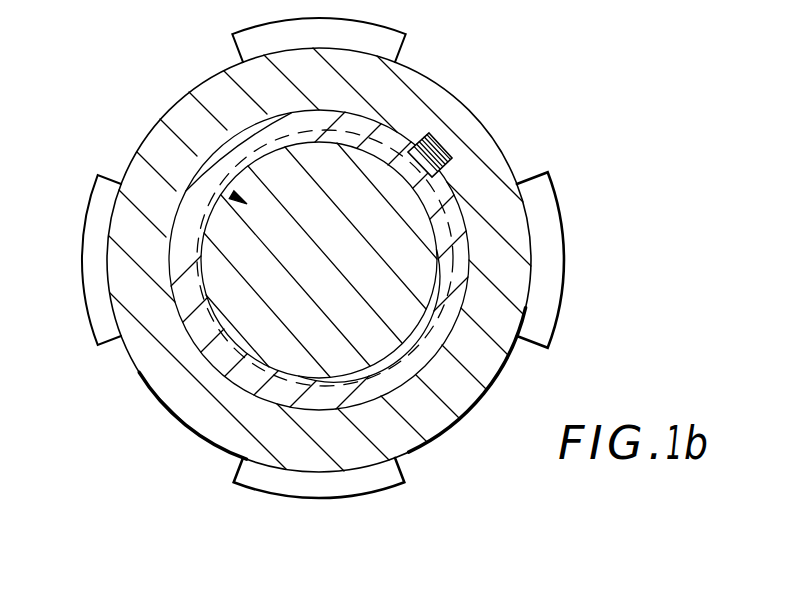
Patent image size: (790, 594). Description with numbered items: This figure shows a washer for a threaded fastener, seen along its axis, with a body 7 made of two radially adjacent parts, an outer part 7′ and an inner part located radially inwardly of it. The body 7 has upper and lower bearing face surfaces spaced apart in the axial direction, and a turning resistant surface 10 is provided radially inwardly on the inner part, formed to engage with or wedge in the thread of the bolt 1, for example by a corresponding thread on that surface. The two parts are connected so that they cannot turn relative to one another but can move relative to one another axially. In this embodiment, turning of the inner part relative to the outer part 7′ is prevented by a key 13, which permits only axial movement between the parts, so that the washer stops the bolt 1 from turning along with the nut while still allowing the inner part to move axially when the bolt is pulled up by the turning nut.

The bolt 1 is at (232, 195).
The body 7 is at (533, 328).
The part 7′ is at (440, 107).
The turning resistant surface 10 is at (201, 265).
The key 13 is at (447, 173).